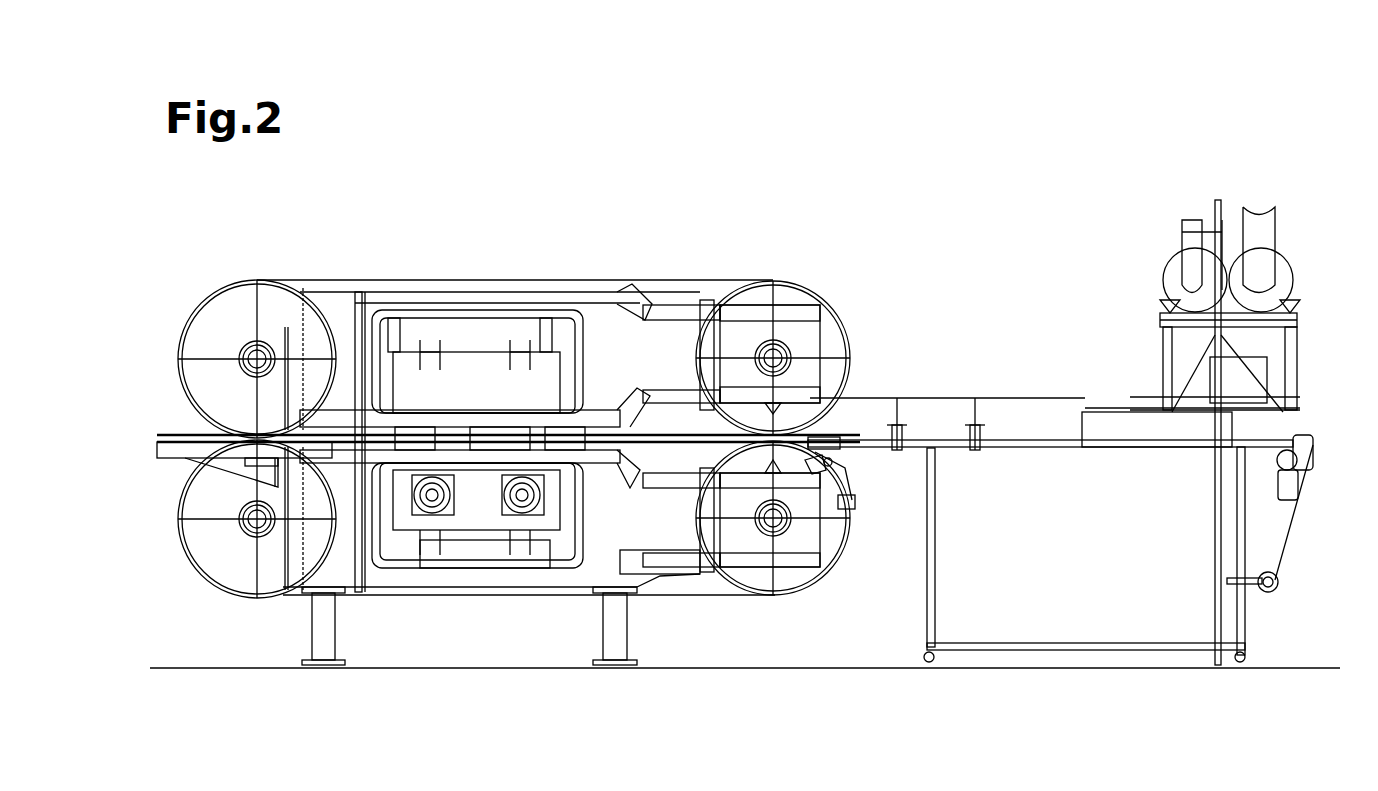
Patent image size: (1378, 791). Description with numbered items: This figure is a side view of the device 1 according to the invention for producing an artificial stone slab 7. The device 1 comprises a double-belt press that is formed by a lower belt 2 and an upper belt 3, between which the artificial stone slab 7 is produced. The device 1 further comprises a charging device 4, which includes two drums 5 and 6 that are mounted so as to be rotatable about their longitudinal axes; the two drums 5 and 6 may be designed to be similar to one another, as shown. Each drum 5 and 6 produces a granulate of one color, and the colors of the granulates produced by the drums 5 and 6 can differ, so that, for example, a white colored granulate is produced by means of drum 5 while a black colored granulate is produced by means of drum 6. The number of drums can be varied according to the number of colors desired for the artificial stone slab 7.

The device 1 is at (716, 178).
The lower belt 2 is at (400, 595).
The upper belt 3 is at (370, 283).
The charging device 4 is at (1233, 175).
The drum 5 is at (1172, 248).
The drum 6 is at (1285, 248).
The artificial stone slab 7 is at (170, 450).